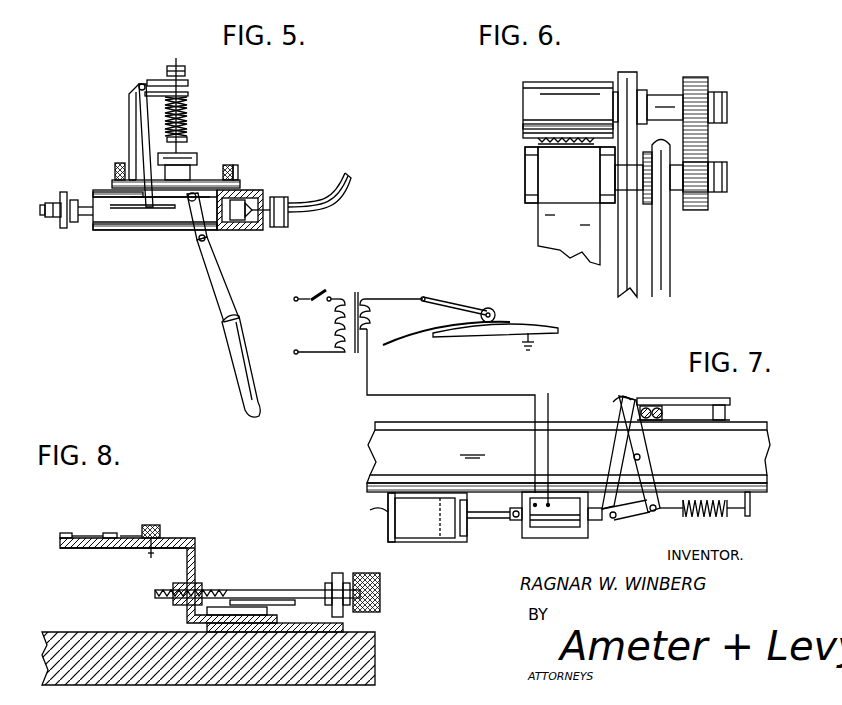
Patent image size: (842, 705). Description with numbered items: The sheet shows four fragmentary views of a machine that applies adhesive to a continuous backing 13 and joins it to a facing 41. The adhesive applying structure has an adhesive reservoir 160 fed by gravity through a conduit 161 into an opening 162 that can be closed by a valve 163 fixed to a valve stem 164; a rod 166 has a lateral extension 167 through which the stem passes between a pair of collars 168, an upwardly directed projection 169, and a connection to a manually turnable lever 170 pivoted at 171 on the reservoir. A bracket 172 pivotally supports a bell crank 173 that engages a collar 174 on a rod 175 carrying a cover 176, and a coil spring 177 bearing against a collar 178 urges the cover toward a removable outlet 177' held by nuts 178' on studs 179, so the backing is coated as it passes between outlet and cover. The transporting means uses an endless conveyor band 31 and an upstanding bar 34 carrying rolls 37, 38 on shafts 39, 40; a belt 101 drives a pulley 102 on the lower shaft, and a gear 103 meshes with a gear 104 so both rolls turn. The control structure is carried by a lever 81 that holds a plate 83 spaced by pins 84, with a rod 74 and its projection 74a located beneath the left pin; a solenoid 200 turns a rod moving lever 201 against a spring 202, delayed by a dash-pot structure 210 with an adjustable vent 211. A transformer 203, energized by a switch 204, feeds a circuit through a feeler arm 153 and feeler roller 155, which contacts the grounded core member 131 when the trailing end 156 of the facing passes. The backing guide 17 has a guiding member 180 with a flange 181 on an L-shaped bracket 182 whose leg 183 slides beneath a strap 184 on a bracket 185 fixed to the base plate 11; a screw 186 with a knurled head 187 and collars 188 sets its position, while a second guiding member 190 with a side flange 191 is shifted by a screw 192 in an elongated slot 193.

In FIG. 8, the base plate 11 is at (365, 668).
In FIG. 5, the continuous backing 13 is at (197, 178).
In FIG. 6, the continuous backing 13 is at (535, 125).
In FIG. 8, the continuous backing 13 is at (90, 534).
In FIG. 8, the guide 17 is at (72, 552).
In FIG. 6, the endless conveyor band 31 is at (540, 225).
In FIG. 6, the upstanding bar 34 is at (627, 275).
In FIG. 6, the roll 37 is at (592, 82).
In FIG. 6, the roll 38 is at (525, 197).
In FIG. 6, the shaft 39 is at (727, 104).
In FIG. 6, the shaft 40 is at (727, 177).
In FIG. 6, the facing 41 is at (552, 145).
In FIG. 7, the facing 41 is at (410, 335).
In FIG. 7, the rod 74 is at (660, 415).
In FIG. 7, the projection 74a is at (633, 436).
In FIG. 7, the lever 81 is at (385, 450).
In FIG. 7, the plate 83 is at (730, 400).
In FIG. 7, the pins 84 is at (645, 406).
In FIG. 6, the belt 101 is at (672, 278).
In FIG. 6, the pulley 102 is at (670, 212).
In FIG. 6, the gear 103 is at (708, 204).
In FIG. 6, the gear 104 is at (703, 78).
In FIG. 7, the core member 131 is at (480, 336).
In FIG. 7, the feeler arm 153 is at (450, 303).
In FIG. 7, the feeler roller 155 is at (493, 308).
In FIG. 7, the trailing end 156 is at (515, 323).
In FIG. 5, the adhesive reservoir 160 is at (132, 230).
In FIG. 5, the conduit 161 is at (348, 176).
In FIG. 5, the opening 162 is at (252, 192).
In FIG. 5, the valve 163 is at (240, 222).
In FIG. 5, the valve stem 164 is at (88, 222).
In FIG. 5, the rod 166 is at (75, 194).
In FIG. 5, the lateral extension 167 is at (62, 230).
In FIG. 5, the collars 168 is at (50, 219).
In FIG. 5, the projection 169 is at (141, 208).
In FIG. 5, the lever 170 is at (222, 312).
In FIG. 5, the pivot 171 is at (196, 243).
In FIG. 5, the bracket 172 is at (124, 102).
In FIG. 5, the bell crank 173 is at (135, 115).
In FIG. 5, the collar 174 is at (186, 70).
In FIG. 5, the rod 175 is at (176, 62).
In FIG. 5, the cover 176 is at (196, 156).
In FIG. 5, the coil spring 177 is at (189, 113).
In FIG. 5, the outlet 177' is at (127, 145).
In FIG. 5, the collar 178 is at (195, 126).
In FIG. 5, the nuts 178' is at (258, 167).
In FIG. 5, the studs 179 is at (232, 165).
In FIG. 8, the guiding member 180 is at (96, 549).
In FIG. 8, the flange 181 is at (60, 536).
In FIG. 8, the L-shaped bracket 182 is at (196, 556).
In FIG. 8, the leg 183 is at (268, 614).
In FIG. 8, the strap 184 is at (242, 600).
In FIG. 8, the bracket 185 is at (343, 627).
In FIG. 8, the screw 186 is at (292, 590).
In FIG. 8, the knurled head 187 is at (380, 588).
In FIG. 8, the collars 188 is at (338, 573).
In FIG. 8, the second guiding member 190 is at (132, 536).
In FIG. 8, the side flange 191 is at (112, 531).
In FIG. 8, the screw 192 is at (156, 525).
In FIG. 8, the elongated slot 193 is at (170, 538).
In FIG. 7, the solenoid 200 is at (544, 540).
In FIG. 7, the rod moving lever 201 is at (640, 386).
In FIG. 7, the spring 202 is at (702, 516).
In FIG. 7, the transformer 203 is at (372, 287).
In FIG. 7, the switch 204 is at (318, 290).
In FIG. 7, the dash-pot structure 210 is at (382, 501).
In FIG. 7, the adjustable vent 211 is at (372, 512).